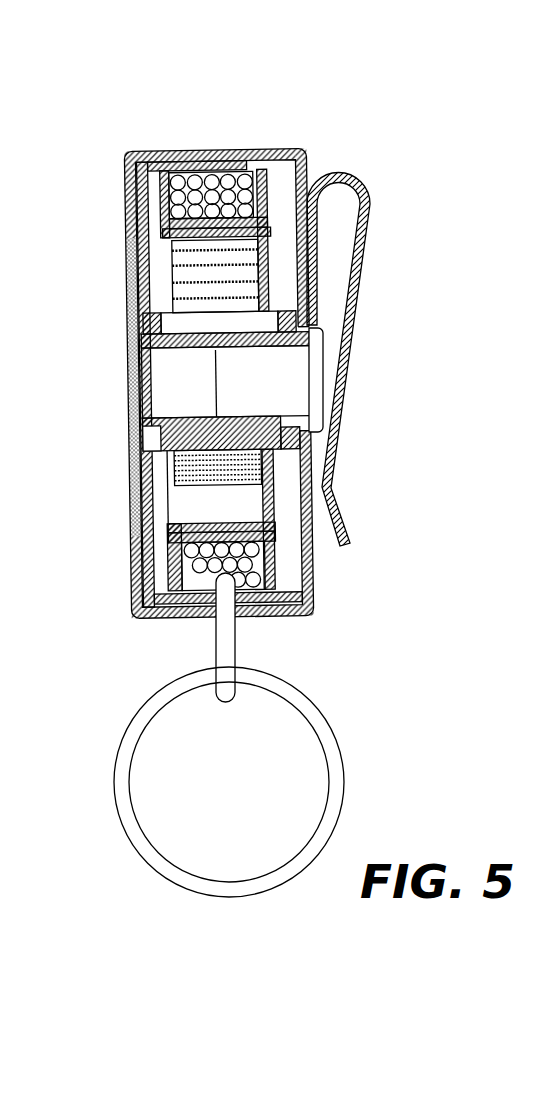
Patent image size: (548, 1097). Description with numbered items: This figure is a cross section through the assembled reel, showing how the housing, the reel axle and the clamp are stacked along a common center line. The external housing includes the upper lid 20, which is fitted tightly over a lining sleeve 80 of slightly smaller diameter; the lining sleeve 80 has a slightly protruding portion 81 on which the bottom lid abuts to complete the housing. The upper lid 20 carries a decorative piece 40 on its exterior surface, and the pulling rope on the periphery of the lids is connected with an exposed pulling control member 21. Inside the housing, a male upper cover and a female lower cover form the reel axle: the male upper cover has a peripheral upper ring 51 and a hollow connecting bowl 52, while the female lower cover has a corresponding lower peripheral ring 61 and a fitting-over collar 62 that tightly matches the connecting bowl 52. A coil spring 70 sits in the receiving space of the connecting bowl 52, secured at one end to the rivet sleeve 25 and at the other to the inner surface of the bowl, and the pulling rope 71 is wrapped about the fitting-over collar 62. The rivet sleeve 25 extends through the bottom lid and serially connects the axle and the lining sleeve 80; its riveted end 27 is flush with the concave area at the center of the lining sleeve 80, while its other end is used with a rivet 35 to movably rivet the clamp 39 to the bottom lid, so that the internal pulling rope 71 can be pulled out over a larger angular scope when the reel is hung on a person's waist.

The upper lid 20 is at (125, 213).
The pulling control member 21 is at (157, 702).
The rivet sleeve 25 is at (142, 413).
The end of rivet sleeve 27 is at (182, 350).
The rivet 35 is at (318, 365).
The clamp 39 is at (356, 300).
The decorative piece 40 is at (130, 328).
The peripheral upper ring 51 is at (172, 568).
The hollow connecting bowl 52 is at (220, 522).
The lower peripheral ring 61 is at (278, 574).
The fitting-over collar 62 is at (167, 615).
The coil spring 70 is at (250, 283).
The pulling rope 71 is at (275, 177).
The lining sleeve 80 is at (125, 207).
The protruding portion 81 is at (288, 150).